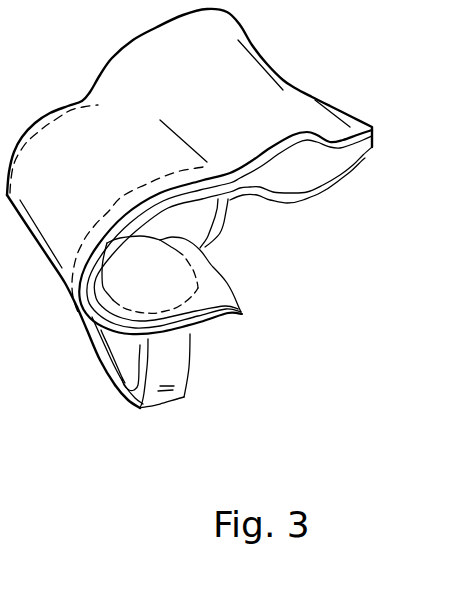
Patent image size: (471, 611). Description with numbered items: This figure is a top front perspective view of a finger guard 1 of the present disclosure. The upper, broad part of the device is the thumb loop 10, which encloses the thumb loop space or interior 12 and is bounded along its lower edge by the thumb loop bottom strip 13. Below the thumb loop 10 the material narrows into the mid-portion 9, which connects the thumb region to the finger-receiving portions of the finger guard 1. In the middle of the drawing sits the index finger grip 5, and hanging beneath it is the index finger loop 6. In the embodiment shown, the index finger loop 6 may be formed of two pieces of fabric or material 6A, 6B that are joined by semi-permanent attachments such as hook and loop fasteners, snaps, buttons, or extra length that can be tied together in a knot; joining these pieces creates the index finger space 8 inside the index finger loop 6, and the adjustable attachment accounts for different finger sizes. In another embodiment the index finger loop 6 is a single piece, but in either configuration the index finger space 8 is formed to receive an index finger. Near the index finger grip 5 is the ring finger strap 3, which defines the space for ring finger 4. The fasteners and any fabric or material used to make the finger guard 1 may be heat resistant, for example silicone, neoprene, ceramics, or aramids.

The finger guard 1 is at (293, 35).
The ring finger strap 3 is at (220, 233).
The space for ring finger 4 is at (224, 222).
The index finger grip 5 is at (190, 280).
The index finger loop 6 is at (178, 370).
The piece of fabric or material 6A is at (123, 395).
The piece of fabric or material 6B is at (120, 380).
The index finger space 8 is at (118, 363).
The mid-portion 9 is at (93, 185).
The thumb loop 10 is at (231, 103).
The thumb loop space or interior 12 is at (292, 186).
The thumb loop bottom strip 13 is at (286, 205).